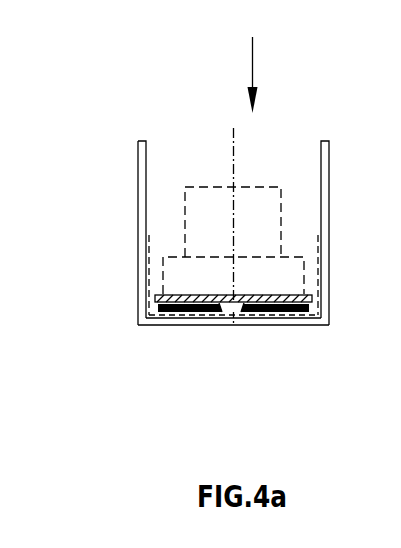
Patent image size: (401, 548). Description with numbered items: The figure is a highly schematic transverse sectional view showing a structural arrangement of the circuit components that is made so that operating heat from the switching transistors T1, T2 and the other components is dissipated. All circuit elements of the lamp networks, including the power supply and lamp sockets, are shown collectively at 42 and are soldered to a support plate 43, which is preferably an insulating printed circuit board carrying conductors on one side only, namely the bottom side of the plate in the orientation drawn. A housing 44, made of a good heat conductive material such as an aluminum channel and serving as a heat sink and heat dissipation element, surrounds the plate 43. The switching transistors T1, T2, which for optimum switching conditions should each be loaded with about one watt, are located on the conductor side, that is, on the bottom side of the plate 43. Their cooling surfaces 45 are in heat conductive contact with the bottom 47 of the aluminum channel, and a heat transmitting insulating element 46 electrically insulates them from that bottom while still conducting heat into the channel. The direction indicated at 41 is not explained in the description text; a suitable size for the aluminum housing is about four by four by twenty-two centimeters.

The incident light / beam direction 41 is at (253, 64).
The circuit elements 42 is at (202, 270).
The support plate 43 is at (157, 298).
The housing 44 is at (330, 182).
The cooling surfaces 45 is at (242, 312).
The heat transmitting insulating element 46 is at (318, 279).
The bottom of the aluminum channel 47 is at (301, 326).
The switching transistor T1 is at (160, 311).
The switching transistor T2 is at (307, 312).